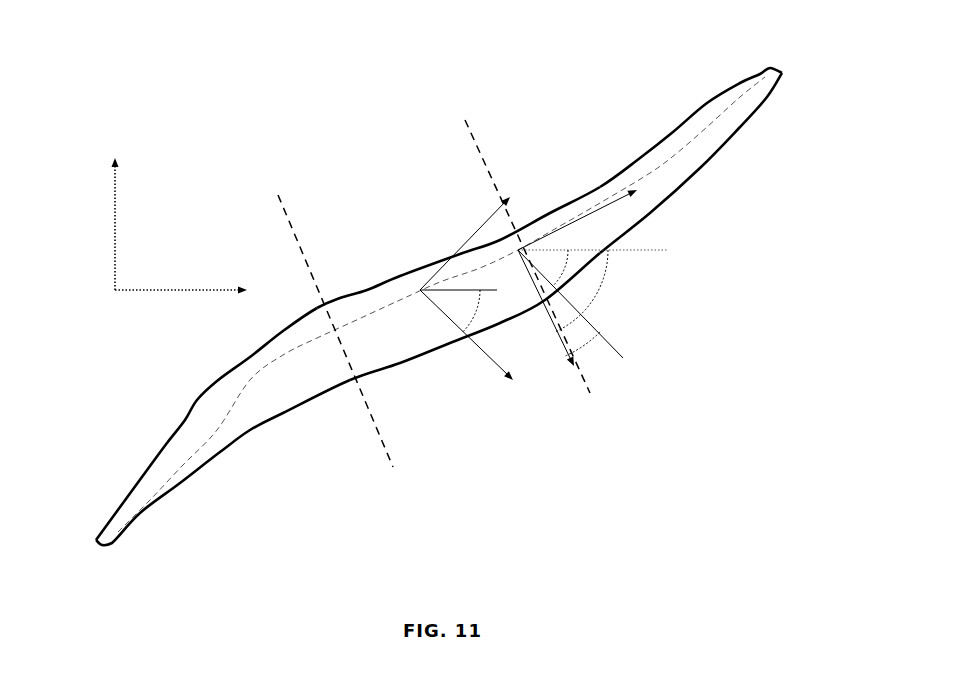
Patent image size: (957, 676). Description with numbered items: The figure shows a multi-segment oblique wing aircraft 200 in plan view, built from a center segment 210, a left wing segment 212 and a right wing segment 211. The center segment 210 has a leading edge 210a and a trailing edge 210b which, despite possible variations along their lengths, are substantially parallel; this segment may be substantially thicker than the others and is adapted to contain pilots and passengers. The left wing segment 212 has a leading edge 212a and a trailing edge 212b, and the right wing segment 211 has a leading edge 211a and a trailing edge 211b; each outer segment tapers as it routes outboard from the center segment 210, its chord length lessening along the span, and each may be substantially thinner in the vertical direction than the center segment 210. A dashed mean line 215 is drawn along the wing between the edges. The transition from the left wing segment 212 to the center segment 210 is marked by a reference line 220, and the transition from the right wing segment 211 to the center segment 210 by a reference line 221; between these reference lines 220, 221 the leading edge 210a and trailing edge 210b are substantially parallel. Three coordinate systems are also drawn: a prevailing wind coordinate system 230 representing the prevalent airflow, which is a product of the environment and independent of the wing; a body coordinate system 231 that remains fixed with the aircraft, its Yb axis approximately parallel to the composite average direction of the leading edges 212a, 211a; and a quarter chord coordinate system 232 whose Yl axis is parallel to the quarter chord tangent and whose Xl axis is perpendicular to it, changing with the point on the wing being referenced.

The multi-segment oblique wing aircraft 200 is at (220, 88).
The center segment 210 is at (430, 262).
The leading edge of center segment 210a is at (397, 276).
The trailing edge of center segment 210b is at (438, 347).
The right wing segment 211 is at (668, 199).
The leading edge of right wing segment 211a is at (712, 101).
The trailing edge of right wing segment 211b is at (737, 130).
The left wing segment 212 is at (197, 404).
The leading edge of left wing segment 212a is at (170, 441).
The trailing edge of left wing segment 212b is at (253, 430).
The mean camber line 215 is at (253, 376).
The reference line 220 is at (290, 210).
The reference line 221 is at (477, 145).
The prevailing wind coordinate system 230 is at (112, 291).
The body coordinate system 231 is at (418, 292).
The quarter chord coordinate system 232 is at (517, 249).